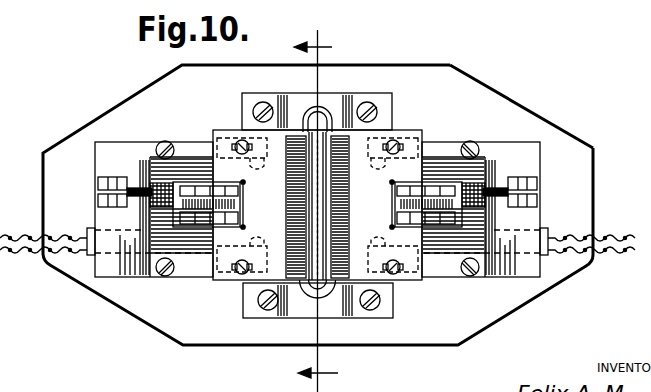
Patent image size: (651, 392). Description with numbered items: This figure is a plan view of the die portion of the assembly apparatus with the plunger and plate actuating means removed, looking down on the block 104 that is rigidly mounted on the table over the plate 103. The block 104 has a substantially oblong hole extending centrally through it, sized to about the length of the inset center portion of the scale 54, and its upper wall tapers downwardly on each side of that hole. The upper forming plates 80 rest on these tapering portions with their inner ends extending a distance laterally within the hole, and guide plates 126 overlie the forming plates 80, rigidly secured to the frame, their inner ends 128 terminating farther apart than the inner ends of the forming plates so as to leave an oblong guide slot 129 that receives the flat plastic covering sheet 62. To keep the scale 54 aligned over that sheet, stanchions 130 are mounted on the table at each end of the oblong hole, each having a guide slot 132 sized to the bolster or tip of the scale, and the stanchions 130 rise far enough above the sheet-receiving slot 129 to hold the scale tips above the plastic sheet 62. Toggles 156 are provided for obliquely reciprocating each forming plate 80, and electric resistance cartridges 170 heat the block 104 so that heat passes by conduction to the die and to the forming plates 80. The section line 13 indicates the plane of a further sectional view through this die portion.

The section line 13 is at (316, 202).
The scale 54 is at (328, 240).
The flat plastic covering sheet 62 is at (344, 212).
The upper forming plates 80 is at (183, 175).
The plate 103 is at (480, 90).
The block 104 is at (514, 133).
The guide plates 126 is at (233, 170).
The inner ends of guide plates 128 is at (288, 157).
The oblong guide slot 129 is at (286, 224).
The stanchions 130 is at (340, 102).
The guide slot 132 is at (311, 110).
The toggles 156 is at (165, 215).
The electric resistance cartridges 170 is at (88, 238).